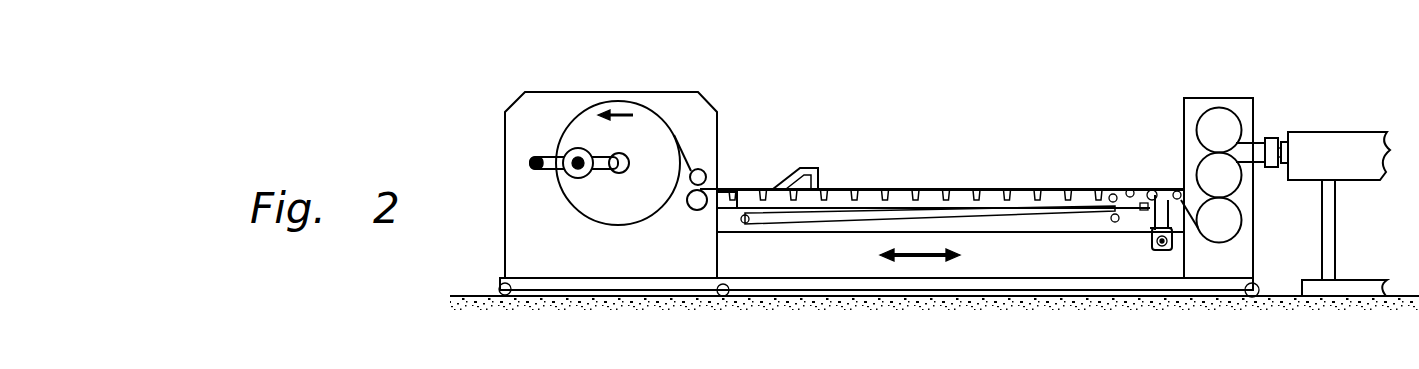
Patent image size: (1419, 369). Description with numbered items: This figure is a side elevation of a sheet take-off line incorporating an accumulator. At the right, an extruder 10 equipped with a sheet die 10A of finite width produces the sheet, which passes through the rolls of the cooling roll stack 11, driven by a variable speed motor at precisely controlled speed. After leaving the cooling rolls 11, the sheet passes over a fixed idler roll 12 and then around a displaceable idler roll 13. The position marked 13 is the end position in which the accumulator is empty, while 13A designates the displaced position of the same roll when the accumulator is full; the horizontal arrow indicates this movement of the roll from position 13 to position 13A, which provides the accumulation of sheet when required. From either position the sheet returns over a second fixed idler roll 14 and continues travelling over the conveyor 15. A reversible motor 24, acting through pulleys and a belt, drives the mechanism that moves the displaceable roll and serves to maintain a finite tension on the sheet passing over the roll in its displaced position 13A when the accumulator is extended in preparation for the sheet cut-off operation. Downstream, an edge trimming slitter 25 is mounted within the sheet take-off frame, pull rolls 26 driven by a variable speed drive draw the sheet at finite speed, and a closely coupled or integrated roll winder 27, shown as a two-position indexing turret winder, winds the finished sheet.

The extruder 10 is at (1330, 148).
The sheet die 10A is at (1258, 148).
The rolls of the cooling roll stack 11 is at (1223, 125).
The fixed idler roll 12 is at (1150, 191).
The displaceable idler roll 13 is at (1113, 222).
The displaced position of displaceable roll 13A is at (748, 222).
The fixed idler roll 14 is at (1131, 190).
The conveyor 15 is at (990, 188).
The reversible motor 24 is at (1160, 250).
The edge trimming slitter 25 is at (810, 168).
The pull rolls 26 is at (706, 170).
The roll winder 27 is at (642, 128).